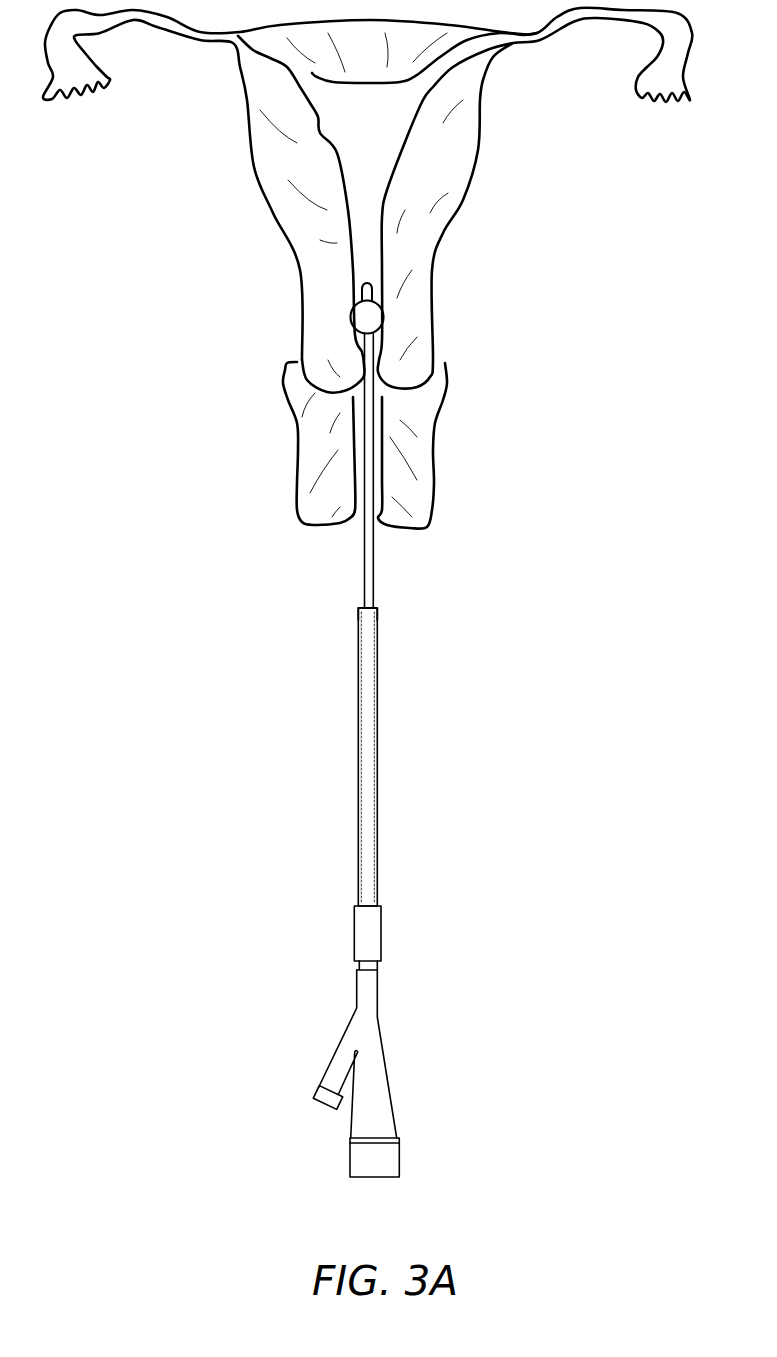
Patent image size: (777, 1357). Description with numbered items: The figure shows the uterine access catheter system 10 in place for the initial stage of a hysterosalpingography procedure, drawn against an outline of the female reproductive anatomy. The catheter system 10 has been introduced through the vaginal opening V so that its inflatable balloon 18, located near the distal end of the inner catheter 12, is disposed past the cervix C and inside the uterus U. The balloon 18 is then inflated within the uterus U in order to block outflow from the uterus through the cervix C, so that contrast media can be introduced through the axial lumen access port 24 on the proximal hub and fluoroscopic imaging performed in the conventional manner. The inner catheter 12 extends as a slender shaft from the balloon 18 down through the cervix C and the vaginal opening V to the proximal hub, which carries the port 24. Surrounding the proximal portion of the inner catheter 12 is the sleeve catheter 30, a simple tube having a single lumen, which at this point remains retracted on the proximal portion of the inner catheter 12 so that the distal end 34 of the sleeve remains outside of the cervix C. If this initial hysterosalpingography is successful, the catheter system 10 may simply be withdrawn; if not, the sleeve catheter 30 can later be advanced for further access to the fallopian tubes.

The uterine access catheter system 10 is at (359, 725).
The inner catheter 12 is at (362, 540).
The inflatable balloon 18 is at (358, 317).
The axial lumen access port 24 is at (377, 1092).
The sleeve catheter 30 is at (368, 768).
The distal end of the sleeve catheter 34 is at (365, 630).
The uterus U is at (368, 168).
The cervix C is at (377, 357).
The vaginal opening V is at (377, 447).